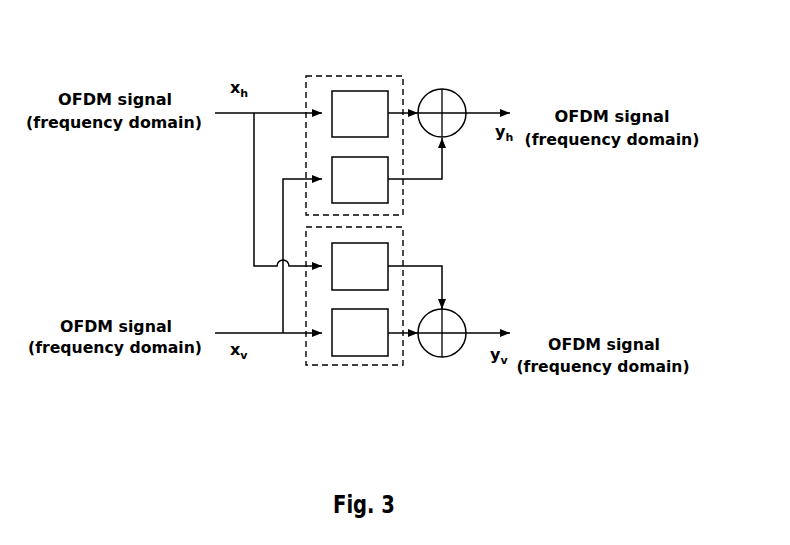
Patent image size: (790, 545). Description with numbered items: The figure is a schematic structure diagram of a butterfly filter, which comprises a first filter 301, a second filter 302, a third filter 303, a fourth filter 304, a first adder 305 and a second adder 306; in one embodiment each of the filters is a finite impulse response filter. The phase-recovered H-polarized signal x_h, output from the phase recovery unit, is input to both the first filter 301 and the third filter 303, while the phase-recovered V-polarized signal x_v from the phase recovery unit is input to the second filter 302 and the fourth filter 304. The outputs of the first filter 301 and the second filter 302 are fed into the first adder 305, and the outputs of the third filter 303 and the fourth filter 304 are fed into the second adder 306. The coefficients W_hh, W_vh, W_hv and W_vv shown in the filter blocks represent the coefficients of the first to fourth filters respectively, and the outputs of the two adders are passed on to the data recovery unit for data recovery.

The first filter 301 is at (357, 88).
The second filter 302 is at (383, 181).
The third filter 303 is at (388, 254).
The fourth filter 304 is at (360, 356).
The first adder 305 is at (468, 95).
The second adder 306 is at (448, 357).